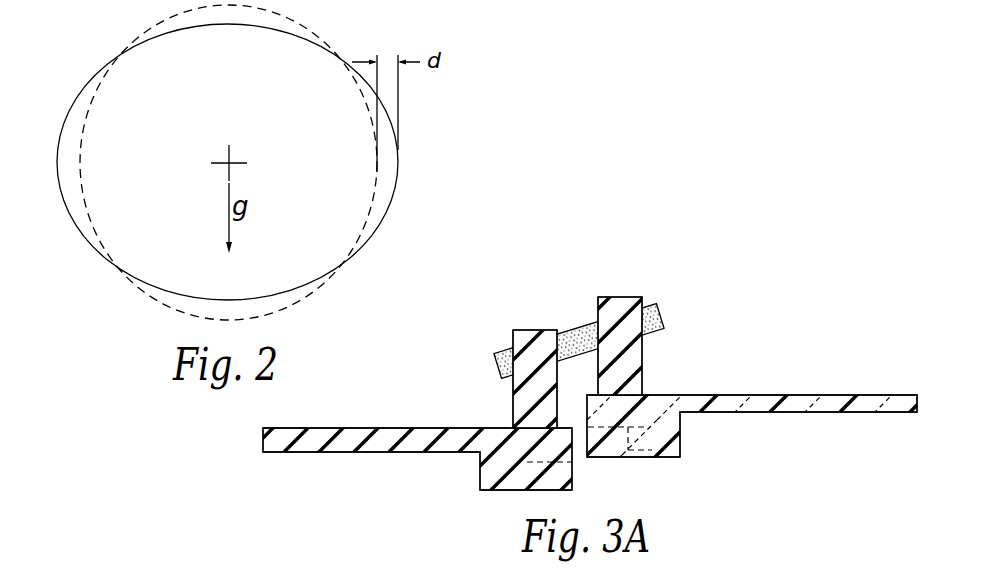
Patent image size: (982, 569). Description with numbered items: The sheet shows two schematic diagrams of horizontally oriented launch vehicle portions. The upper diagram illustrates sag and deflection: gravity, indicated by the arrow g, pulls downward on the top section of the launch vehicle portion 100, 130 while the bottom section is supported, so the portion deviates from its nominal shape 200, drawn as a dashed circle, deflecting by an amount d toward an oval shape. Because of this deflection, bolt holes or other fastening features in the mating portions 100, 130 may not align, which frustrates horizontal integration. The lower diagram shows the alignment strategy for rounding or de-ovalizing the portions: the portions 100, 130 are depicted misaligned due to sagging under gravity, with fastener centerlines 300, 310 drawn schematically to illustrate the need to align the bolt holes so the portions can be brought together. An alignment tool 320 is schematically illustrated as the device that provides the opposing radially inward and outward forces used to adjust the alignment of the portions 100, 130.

In FIG. 2, the launch vehicle portion 100 is at (219, 150).
In FIG. 3A, the launch vehicle portion 100 is at (348, 443).
In FIG. 2, the launch vehicle portion 130 is at (100, 72).
In FIG. 3A, the launch vehicle portion 130 is at (793, 403).
In FIG. 2, the nominal shape 200 is at (150, 295).
In FIG. 3A, the fastener centerline 300 is at (530, 453).
In FIG. 3A, the fastener centerline 310 is at (648, 458).
In FIG. 3A, the alignment tool 320 is at (580, 303).